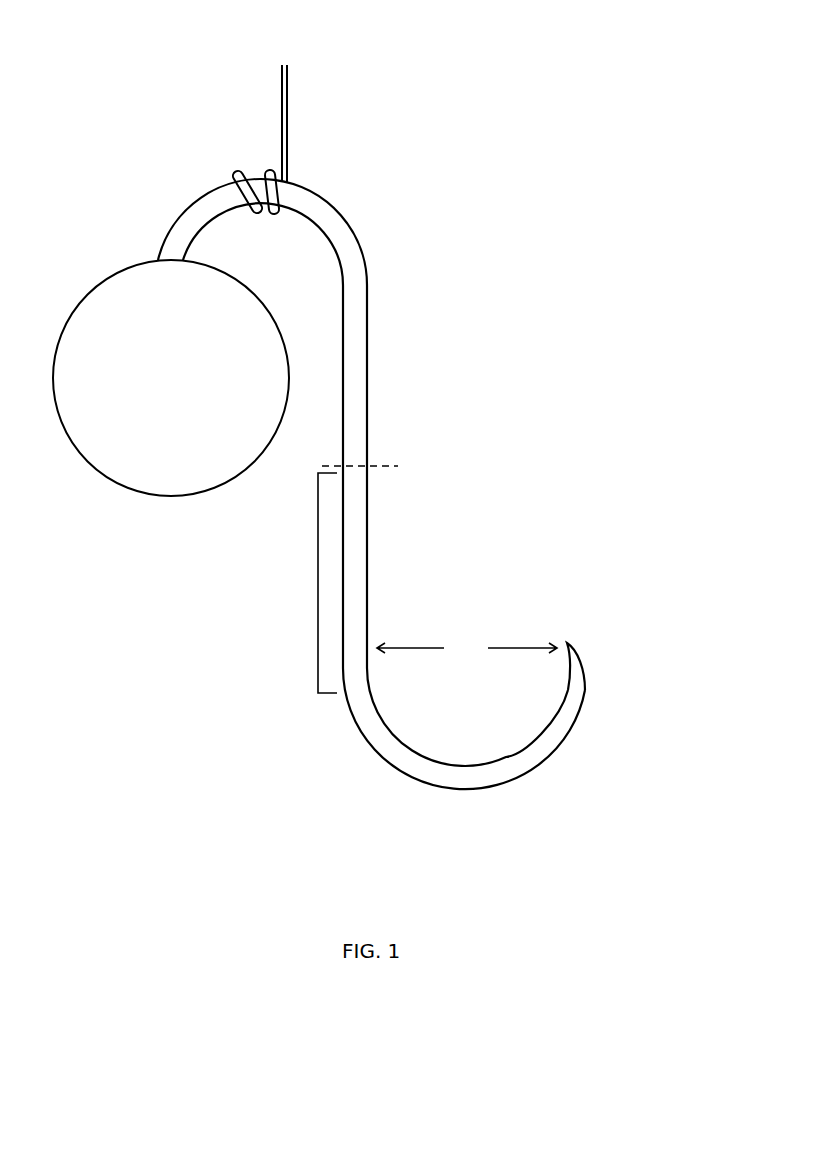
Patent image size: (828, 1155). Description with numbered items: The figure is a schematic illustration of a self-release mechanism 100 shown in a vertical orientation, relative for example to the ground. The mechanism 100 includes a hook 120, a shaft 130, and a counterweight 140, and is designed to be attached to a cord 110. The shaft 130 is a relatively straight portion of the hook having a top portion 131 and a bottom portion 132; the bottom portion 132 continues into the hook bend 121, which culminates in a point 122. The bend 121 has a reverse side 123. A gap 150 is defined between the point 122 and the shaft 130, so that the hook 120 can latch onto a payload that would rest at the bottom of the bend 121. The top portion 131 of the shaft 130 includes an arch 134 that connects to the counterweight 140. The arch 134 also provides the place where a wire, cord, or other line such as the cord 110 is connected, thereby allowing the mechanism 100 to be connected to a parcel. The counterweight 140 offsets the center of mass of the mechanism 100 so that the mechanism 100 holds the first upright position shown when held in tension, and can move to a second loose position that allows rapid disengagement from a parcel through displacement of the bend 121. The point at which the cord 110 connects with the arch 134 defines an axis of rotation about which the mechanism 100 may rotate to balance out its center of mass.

The self-release mechanism 100 is at (630, 260).
The cord 110 is at (277, 125).
The arch 134 is at (295, 178).
The counterweight 140 is at (171, 378).
The top portion 131 is at (382, 315).
The shaft 130 is at (370, 447).
The bottom portion 132 is at (318, 583).
The hook 120 is at (590, 735).
The hook bend 121 is at (472, 797).
The point 122 is at (579, 645).
The reverse side 123 is at (453, 765).
The gap 150 is at (467, 648).